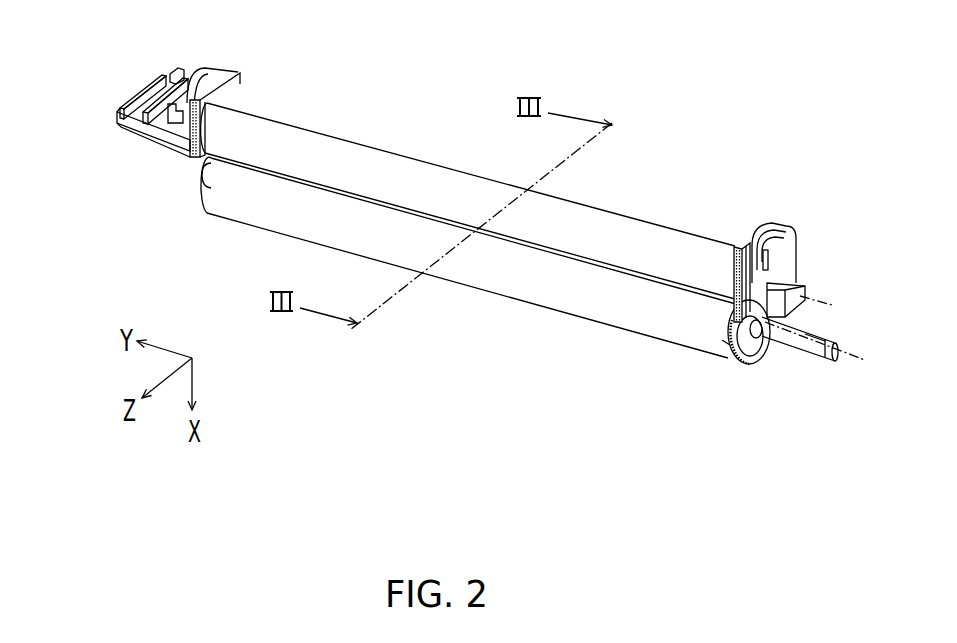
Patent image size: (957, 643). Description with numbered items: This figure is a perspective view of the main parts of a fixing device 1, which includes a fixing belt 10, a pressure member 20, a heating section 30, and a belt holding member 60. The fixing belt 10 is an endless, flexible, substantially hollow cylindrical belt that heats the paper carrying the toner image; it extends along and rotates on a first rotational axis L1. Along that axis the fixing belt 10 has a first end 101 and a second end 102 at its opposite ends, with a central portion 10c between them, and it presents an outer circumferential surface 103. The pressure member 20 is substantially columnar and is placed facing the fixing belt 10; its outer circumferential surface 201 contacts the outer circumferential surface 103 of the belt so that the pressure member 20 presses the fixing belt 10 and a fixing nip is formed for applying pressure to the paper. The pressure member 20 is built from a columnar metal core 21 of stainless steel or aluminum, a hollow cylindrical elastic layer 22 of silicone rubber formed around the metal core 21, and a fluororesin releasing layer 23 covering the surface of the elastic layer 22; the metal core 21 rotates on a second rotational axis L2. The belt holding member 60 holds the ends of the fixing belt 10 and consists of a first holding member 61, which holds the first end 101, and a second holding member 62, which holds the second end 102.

The fixing device 1 is at (703, 92).
The fixing belt 10 is at (437, 131).
The central portion 10c is at (468, 165).
The pressure member 20 is at (445, 303).
The metal core 21 is at (791, 350).
The elastic layer 22 is at (740, 348).
The releasing layer 23 is at (722, 340).
The heating section 30 is at (116, 48).
The belt holding member 60 is at (501, 158).
The first holding member 61 is at (791, 232).
The second holding member 62 is at (233, 30).
The first end 101 is at (748, 243).
The second end 102 is at (240, 90).
The outer circumferential surface 103 is at (620, 204).
The outer circumferential surface 201 is at (568, 318).
The first rotational axis L1 is at (830, 300).
The second rotational axis L2 is at (848, 366).